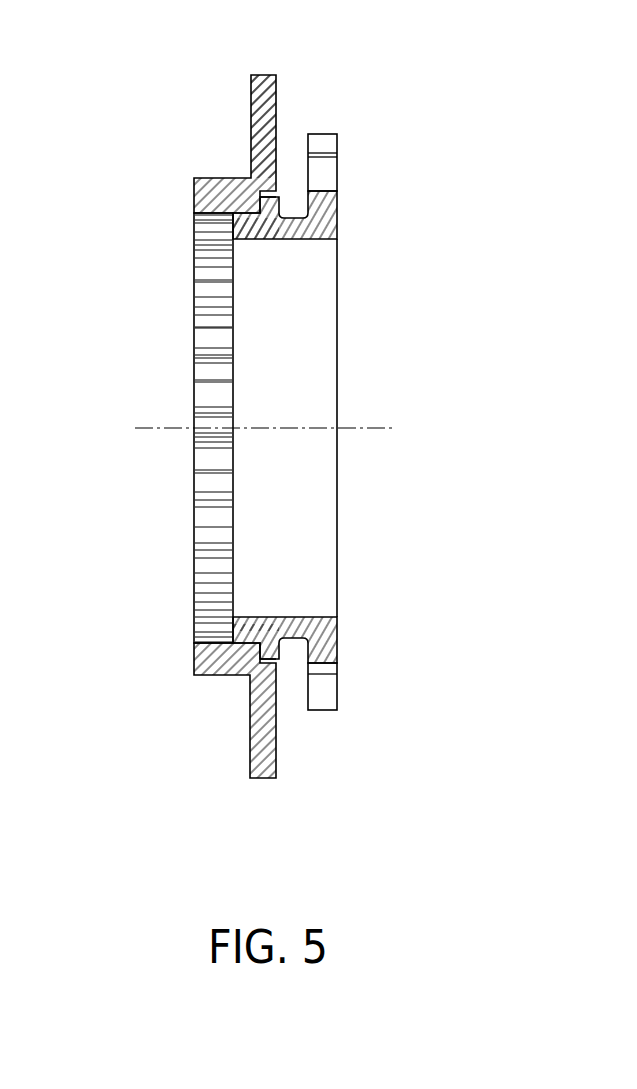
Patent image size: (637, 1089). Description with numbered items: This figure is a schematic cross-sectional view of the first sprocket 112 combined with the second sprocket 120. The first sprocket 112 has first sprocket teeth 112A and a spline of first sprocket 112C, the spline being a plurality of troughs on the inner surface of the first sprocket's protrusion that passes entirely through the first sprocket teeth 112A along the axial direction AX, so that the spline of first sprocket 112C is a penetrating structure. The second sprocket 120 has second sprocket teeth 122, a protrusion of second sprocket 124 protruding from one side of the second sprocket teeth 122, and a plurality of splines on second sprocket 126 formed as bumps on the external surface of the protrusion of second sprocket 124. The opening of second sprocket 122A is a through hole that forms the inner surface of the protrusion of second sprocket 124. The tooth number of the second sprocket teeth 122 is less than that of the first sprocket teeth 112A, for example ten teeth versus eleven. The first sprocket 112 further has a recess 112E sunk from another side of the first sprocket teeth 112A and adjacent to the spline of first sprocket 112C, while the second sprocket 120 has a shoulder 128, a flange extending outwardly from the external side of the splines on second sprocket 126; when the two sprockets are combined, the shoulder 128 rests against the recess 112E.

The first sprocket 112 is at (170, 165).
The first sprocket teeth 112A is at (264, 85).
The spline of first sprocket 112C is at (200, 249).
The recess 112E is at (294, 201).
The second sprocket 120 is at (376, 164).
The second sprocket teeth 122 is at (323, 146).
The opening of second sprocket 122A is at (317, 502).
The protrusion of second sprocket 124 is at (295, 227).
The splines on second sprocket 126 is at (248, 228).
The shoulder 128 is at (270, 230).
The axial direction AX is at (381, 423).